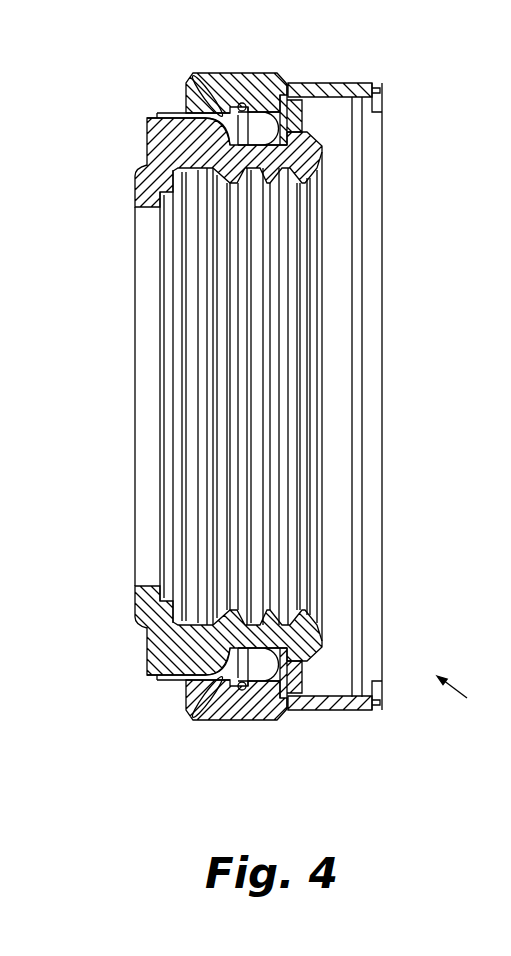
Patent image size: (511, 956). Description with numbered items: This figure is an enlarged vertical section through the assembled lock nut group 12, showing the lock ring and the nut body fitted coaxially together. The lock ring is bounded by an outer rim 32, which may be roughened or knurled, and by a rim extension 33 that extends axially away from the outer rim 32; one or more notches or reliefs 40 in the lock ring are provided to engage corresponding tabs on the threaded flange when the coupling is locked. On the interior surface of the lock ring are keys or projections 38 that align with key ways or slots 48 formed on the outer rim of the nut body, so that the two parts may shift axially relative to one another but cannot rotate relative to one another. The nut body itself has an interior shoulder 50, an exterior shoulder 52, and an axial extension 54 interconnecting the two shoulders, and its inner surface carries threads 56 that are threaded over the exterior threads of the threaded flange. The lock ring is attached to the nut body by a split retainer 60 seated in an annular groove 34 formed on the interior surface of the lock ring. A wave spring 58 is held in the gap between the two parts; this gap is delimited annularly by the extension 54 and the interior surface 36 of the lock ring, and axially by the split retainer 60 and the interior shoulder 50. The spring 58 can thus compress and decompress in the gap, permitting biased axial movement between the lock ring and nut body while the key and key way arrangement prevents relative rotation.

The lock nut group 12 is at (468, 694).
The outer rim 32 is at (200, 73).
The rim extension 33 is at (343, 85).
The annular slot or groove 34 is at (284, 92).
The interior surface 36 is at (246, 104).
The keys or projections 38 is at (197, 80).
The notches or reliefs 40 is at (382, 94).
The key ways or slots 48 is at (173, 113).
The interior shoulder 50 is at (200, 120).
The exterior shoulder 52 is at (290, 130).
The axial extension 54 is at (182, 124).
The threads 56 is at (205, 531).
The wave spring 58 is at (263, 125).
The split retainer 60 is at (300, 100).